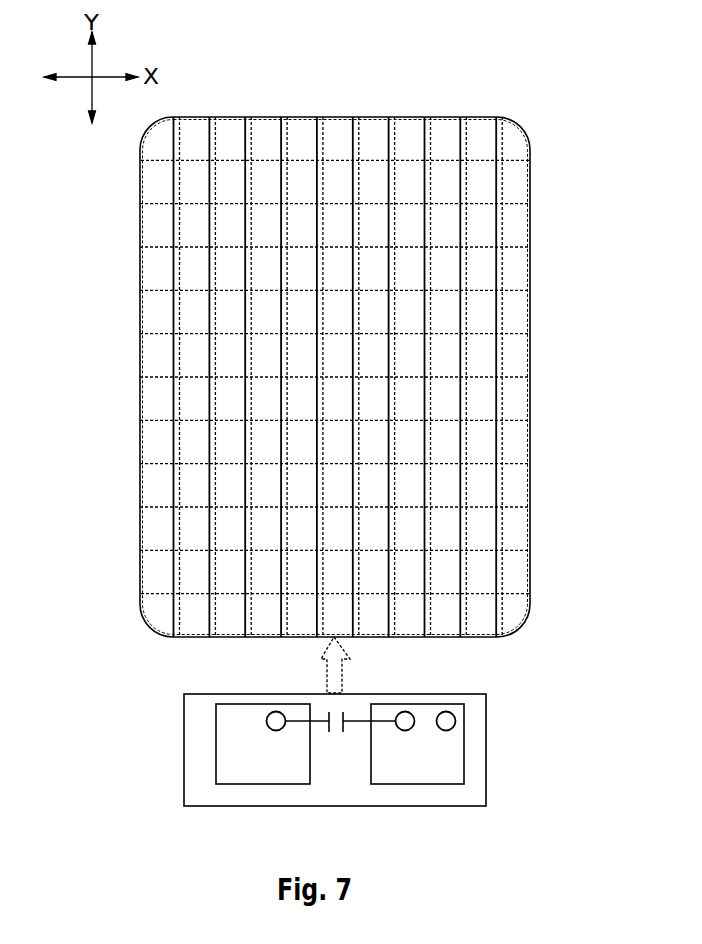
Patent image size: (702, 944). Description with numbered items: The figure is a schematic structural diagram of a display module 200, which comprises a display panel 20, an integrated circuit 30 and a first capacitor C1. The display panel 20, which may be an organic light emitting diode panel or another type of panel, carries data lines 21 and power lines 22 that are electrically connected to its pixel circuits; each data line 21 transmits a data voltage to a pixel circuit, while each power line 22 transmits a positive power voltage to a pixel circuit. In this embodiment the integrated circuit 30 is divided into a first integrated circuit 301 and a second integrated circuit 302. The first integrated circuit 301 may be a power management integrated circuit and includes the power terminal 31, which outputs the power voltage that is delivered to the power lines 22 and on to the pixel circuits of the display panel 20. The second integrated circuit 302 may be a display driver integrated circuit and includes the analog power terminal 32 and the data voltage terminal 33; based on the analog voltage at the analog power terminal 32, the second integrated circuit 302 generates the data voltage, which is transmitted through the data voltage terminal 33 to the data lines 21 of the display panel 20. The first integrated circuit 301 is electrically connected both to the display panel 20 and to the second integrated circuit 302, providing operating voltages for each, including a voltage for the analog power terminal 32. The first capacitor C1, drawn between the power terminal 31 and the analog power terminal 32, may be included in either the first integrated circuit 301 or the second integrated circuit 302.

The display panel 20 is at (357, 371).
The data lines 21 is at (317, 132).
The power lines 22 is at (376, 160).
The integrated circuit 30 is at (375, 757).
The first integrated circuit 301 is at (263, 784).
The second integrated circuit 302 is at (420, 784).
The power terminal 31 is at (276, 711).
The analog power terminal 32 is at (405, 711).
The data voltage terminal 33 is at (446, 711).
The first capacitor C1 is at (340, 737).
The display module 200 is at (357, 466).